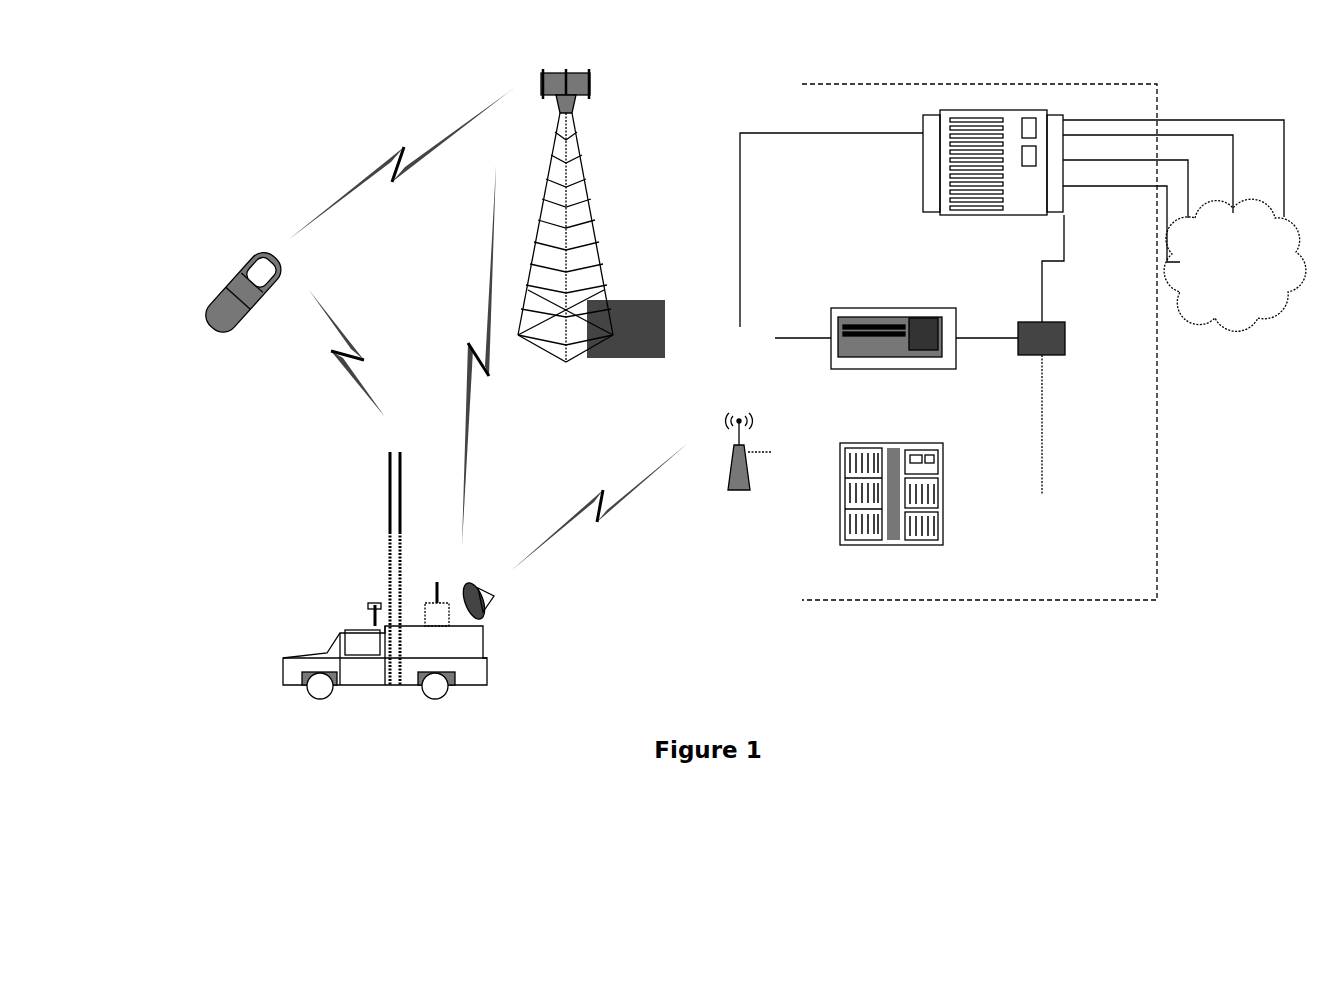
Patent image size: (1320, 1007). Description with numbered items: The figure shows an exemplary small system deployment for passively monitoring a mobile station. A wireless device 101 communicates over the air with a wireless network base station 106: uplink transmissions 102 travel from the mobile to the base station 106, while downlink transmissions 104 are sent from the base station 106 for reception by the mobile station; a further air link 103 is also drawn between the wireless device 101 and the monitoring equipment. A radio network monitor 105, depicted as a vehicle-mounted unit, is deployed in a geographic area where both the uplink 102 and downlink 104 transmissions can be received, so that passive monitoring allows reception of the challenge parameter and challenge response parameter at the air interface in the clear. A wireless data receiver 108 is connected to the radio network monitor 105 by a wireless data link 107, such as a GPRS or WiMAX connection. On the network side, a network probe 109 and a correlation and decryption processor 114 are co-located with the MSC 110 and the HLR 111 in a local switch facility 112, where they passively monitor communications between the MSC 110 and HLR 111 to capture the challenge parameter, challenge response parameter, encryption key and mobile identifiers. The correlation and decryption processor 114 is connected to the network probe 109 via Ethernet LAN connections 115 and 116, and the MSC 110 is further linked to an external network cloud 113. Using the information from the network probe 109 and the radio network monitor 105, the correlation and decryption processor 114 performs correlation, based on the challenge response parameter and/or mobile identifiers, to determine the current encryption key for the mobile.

The wireless device 101 is at (235, 252).
The uplink transmissions 102 is at (401, 164).
The wireless link to mobile base station 103 is at (342, 353).
The downlink transmissions 104 is at (458, 355).
The radio network monitor 105 is at (388, 590).
The wireless network base station 106 is at (591, 215).
The wireless data link 107 is at (600, 506).
The wireless data receiver 108 is at (741, 467).
The network probe 109 is at (1067, 408).
The MSC 110 is at (1103, 216).
The HLR 111 is at (891, 510).
The local switch facility 112 is at (979, 342).
The external network cloud 113 is at (1235, 265).
The correlation and decryption processor 114 is at (893, 354).
The Ethernet LAN connection 115 is at (987, 327).
The Ethernet LAN connection 116 is at (826, 256).